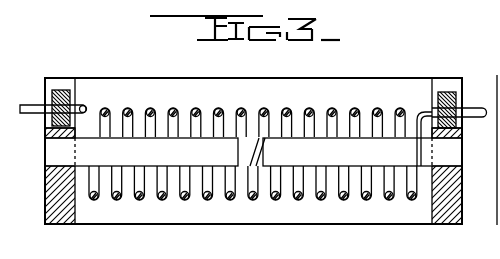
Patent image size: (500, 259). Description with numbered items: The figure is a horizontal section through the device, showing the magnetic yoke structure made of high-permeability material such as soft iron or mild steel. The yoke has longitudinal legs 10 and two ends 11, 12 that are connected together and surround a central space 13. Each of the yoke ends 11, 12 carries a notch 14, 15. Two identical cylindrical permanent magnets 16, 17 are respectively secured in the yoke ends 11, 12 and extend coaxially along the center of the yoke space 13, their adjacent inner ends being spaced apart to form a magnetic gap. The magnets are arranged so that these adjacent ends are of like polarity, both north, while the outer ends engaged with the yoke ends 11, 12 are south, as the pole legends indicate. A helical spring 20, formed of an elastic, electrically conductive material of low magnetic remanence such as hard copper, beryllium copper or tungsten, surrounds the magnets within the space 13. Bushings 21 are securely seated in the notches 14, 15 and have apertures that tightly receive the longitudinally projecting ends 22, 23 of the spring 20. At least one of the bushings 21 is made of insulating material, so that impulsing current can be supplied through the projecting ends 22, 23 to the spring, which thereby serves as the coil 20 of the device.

The longitudinal legs 10 is at (275, 218).
The yoke end 11 is at (57, 224).
The yoke end 12 is at (450, 224).
The central space 13 is at (352, 87).
The notch 14 is at (68, 78).
The notch 15 is at (444, 80).
The permanent magnet 16 is at (141, 152).
The permanent magnet 17 is at (362, 152).
The helical spring 20 is at (270, 97).
The bushing 21 is at (55, 96).
The projecting end of spring 22 is at (29, 113).
The projecting end of spring 23 is at (476, 119).